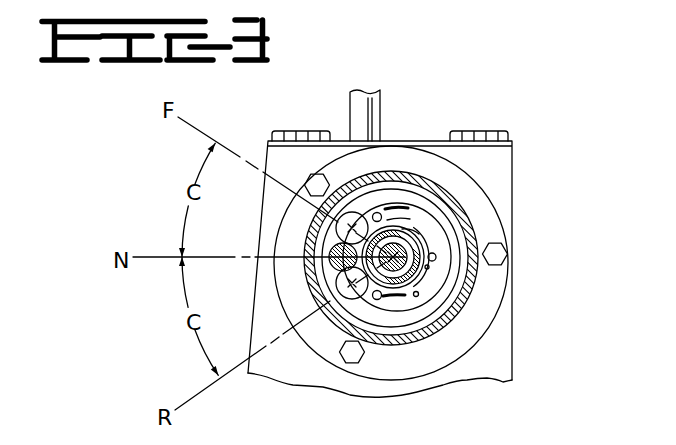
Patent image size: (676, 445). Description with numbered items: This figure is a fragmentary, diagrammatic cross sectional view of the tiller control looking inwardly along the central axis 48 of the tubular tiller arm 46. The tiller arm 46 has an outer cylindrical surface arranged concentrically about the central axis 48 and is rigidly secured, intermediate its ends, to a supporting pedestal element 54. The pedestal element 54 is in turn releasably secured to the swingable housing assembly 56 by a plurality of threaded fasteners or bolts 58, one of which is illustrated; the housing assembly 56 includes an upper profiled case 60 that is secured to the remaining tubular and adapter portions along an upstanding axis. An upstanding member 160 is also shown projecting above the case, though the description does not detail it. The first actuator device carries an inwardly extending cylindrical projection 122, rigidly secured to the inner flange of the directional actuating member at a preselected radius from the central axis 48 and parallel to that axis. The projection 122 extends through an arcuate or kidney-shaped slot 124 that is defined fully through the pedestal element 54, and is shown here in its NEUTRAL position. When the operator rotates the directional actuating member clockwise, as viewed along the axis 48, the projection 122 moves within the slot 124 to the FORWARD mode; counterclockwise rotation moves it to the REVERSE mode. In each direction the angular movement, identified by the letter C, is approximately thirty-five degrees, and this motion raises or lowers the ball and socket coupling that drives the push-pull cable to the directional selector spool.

The tubular tiller arm 46 is at (400, 273).
The central axis 48 is at (428, 182).
The supporting pedestal element 54 is at (463, 213).
The swingable housing assembly 56 is at (524, 332).
The threaded fasteners or bolts 58 is at (505, 250).
The upper profiled case 60 is at (452, 377).
The inwardly extending cylindrical projection 122 is at (335, 251).
The arcuate or kidney-shaped slot 124 is at (335, 271).
The shaft 160 is at (350, 101).